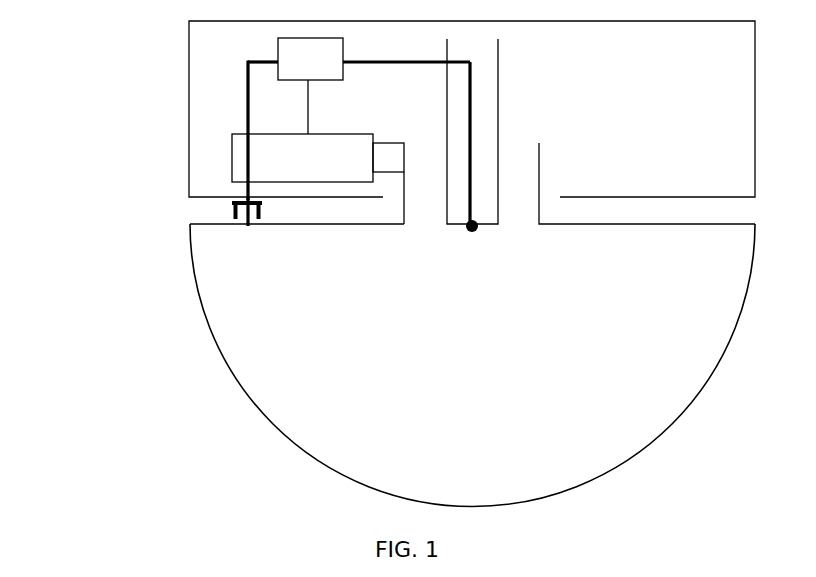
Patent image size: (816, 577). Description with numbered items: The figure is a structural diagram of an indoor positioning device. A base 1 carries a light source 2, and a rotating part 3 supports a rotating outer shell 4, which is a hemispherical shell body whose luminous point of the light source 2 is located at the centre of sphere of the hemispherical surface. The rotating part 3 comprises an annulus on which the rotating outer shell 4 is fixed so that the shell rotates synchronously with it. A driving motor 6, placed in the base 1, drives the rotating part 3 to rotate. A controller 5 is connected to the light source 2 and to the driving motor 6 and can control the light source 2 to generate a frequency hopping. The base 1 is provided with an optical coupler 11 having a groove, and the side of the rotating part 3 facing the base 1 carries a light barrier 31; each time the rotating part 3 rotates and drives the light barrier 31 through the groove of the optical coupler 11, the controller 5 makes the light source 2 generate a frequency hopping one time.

The base 1 is at (172, 60).
The light source 2 is at (472, 250).
The rotating part 3 is at (623, 242).
The rotating outer shell 4 is at (239, 410).
The controller 5 is at (262, 82).
The driving motor 6 is at (215, 160).
The optical coupler 11 is at (216, 209).
The light barrier 31 is at (231, 235).